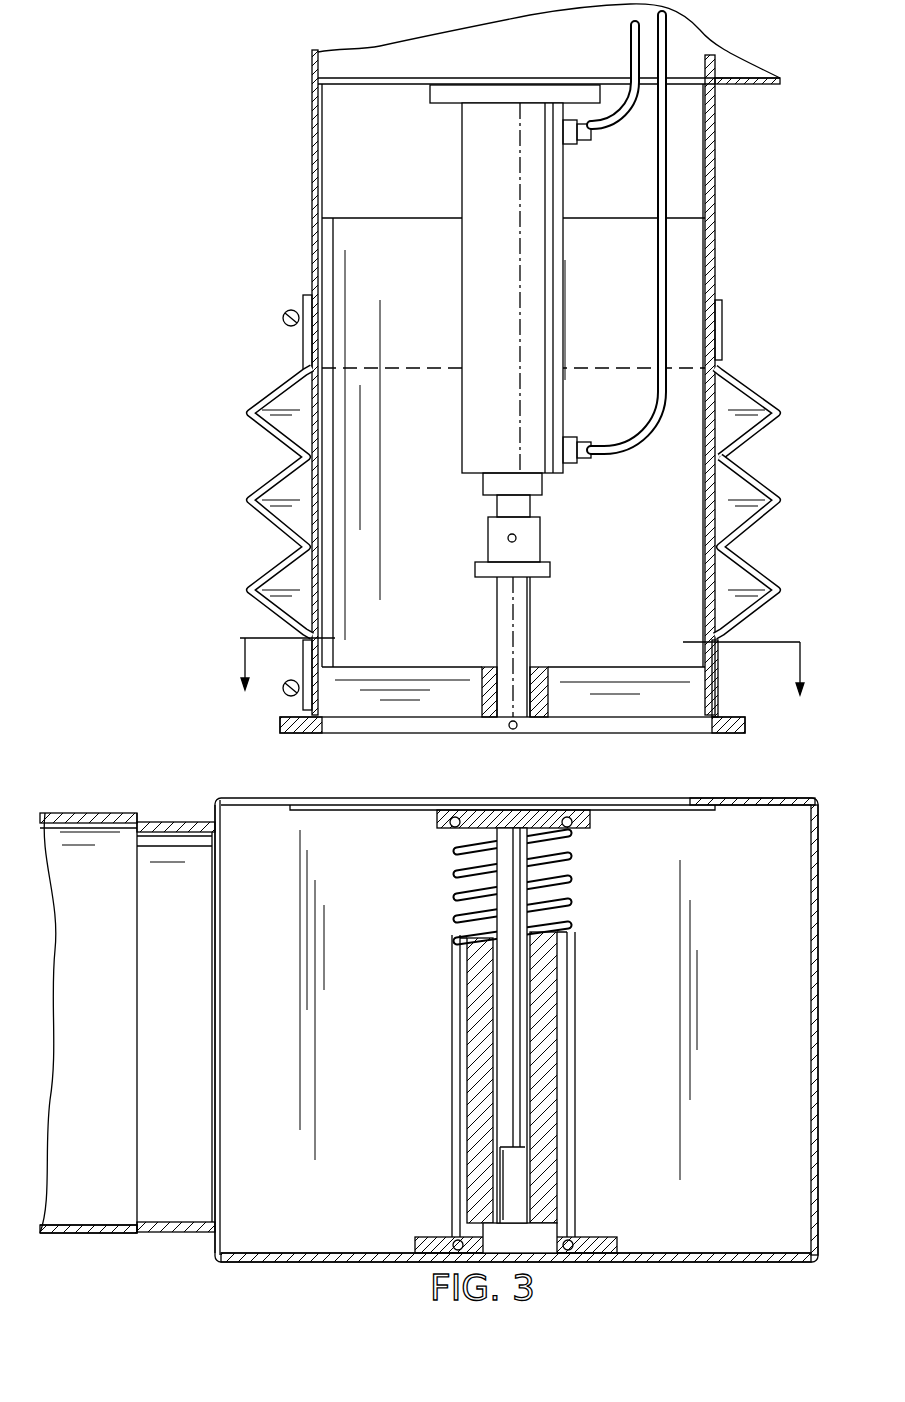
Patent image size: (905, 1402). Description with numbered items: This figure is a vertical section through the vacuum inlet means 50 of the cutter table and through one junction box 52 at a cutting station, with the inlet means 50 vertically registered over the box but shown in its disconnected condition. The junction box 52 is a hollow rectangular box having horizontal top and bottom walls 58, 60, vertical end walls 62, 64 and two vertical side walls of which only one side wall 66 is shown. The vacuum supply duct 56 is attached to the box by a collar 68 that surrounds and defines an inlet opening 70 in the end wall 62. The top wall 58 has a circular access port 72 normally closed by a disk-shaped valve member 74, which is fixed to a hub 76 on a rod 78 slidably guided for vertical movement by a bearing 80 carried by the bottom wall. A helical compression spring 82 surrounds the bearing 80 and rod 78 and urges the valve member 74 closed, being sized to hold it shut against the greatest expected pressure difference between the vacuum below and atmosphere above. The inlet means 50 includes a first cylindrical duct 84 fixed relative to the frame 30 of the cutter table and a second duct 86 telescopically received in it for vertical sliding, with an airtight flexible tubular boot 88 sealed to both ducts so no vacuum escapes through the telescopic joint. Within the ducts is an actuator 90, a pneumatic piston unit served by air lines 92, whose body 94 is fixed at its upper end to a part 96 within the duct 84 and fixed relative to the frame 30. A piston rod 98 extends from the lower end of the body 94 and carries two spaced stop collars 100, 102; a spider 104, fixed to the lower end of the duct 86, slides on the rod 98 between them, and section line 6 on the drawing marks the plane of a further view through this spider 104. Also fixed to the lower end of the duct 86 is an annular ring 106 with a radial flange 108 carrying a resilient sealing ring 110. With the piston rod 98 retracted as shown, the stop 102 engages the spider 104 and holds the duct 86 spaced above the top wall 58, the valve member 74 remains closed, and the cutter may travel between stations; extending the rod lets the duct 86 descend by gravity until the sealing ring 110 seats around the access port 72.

The section line 6- 6 is at (518, 654).
The frame 30 is at (740, 80).
The inlet means 50 is at (303, 200).
The junction box 52 is at (754, 795).
The vacuum supply duct 56 is at (90, 815).
The top wall 58 is at (710, 798).
The bottom wall 60 is at (695, 1253).
The end wall 62 is at (221, 812).
The end wall 64 is at (815, 920).
The side wall 66 is at (790, 1058).
The collar 68 is at (158, 818).
The inlet opening 70 is at (215, 1130).
The access port 72 is at (650, 800).
The valve member 74 is at (640, 812).
The hub 76 is at (590, 824).
The rod 78 is at (525, 1032).
The bearing 80 is at (558, 1070).
The helical compression spring 82 is at (560, 863).
The first duct 84 is at (715, 128).
The second duct 86 is at (712, 392).
The flexible tubular boot 88 is at (735, 545).
The actuator 90 is at (482, 142).
The lines 92 is at (640, 50).
The body 94 is at (548, 178).
The part 96 is at (362, 78).
The piston rod 98 is at (497, 504).
The stop collar 100 is at (541, 546).
The stop collar 102 is at (555, 730).
The spider 104 is at (563, 668).
The annular ring 106 is at (715, 680).
The annular flange 108 is at (742, 712).
The sealing ring 110 is at (745, 730).